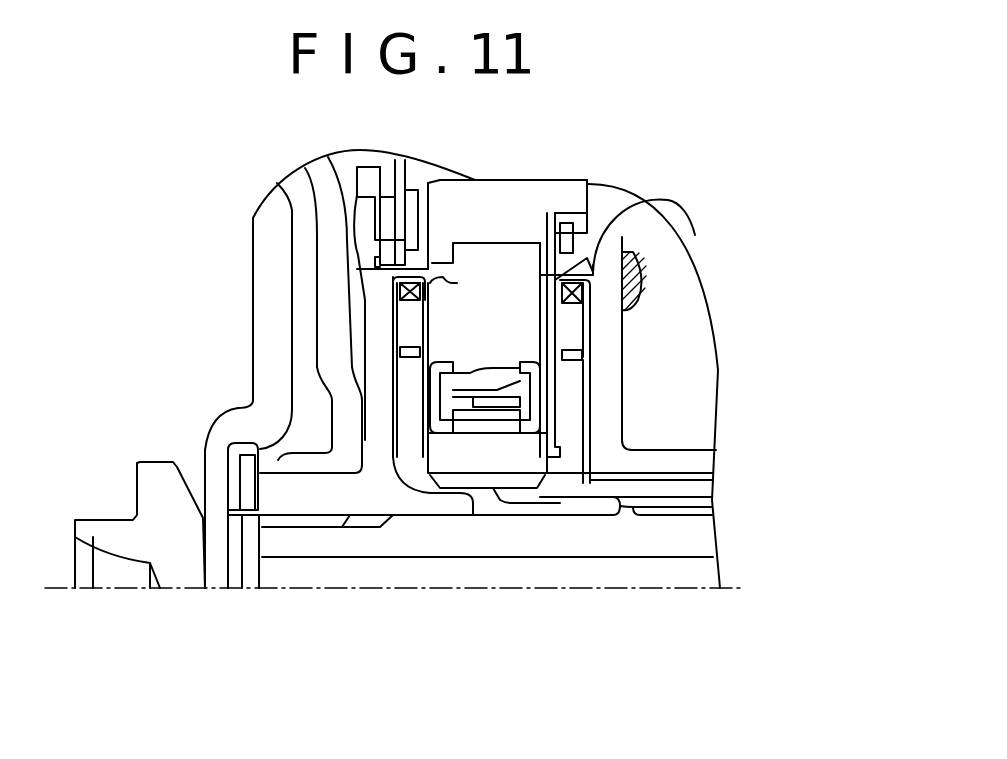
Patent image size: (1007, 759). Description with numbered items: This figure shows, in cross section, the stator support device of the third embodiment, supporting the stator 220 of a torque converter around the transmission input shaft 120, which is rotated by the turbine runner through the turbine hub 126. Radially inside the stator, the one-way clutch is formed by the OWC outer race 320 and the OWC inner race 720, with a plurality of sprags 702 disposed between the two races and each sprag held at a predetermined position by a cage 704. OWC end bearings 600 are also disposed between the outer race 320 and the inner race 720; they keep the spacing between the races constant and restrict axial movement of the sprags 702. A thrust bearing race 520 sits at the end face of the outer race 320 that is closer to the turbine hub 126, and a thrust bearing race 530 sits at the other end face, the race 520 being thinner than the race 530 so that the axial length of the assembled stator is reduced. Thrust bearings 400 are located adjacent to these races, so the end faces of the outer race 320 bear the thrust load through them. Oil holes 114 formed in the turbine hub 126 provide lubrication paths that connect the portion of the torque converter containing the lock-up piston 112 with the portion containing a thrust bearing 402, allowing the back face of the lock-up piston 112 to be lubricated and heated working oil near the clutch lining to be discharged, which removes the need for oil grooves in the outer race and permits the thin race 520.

The lock-up piston 112 is at (332, 240).
The oil holes 114 is at (388, 366).
The transmission input shaft 120 is at (553, 540).
The turbine hub 126 is at (328, 490).
The stator 220 is at (477, 198).
The OWC outer race 320 is at (497, 257).
The thrust bearings 400 is at (593, 275).
The thrust bearing 402 is at (407, 327).
The thrust bearing race 520 is at (429, 472).
The thrust bearing race 530 is at (640, 292).
The OWC end bearings 600 is at (394, 392).
The sprags 702 is at (545, 397).
The cage 704 is at (532, 410).
The OWC inner race 720 is at (517, 453).